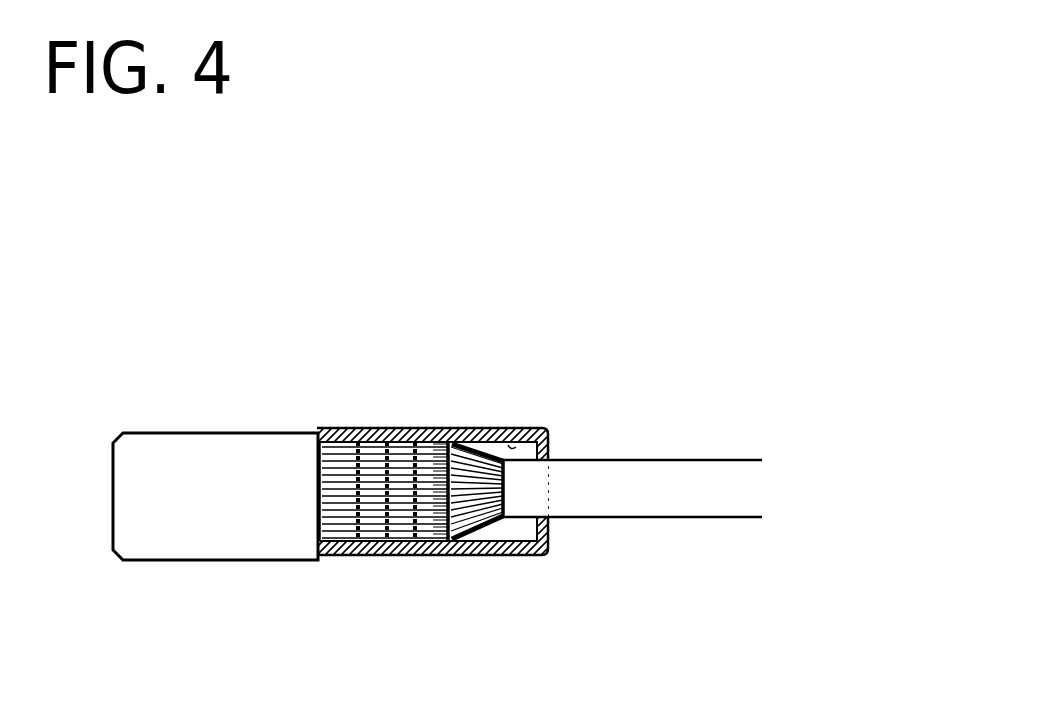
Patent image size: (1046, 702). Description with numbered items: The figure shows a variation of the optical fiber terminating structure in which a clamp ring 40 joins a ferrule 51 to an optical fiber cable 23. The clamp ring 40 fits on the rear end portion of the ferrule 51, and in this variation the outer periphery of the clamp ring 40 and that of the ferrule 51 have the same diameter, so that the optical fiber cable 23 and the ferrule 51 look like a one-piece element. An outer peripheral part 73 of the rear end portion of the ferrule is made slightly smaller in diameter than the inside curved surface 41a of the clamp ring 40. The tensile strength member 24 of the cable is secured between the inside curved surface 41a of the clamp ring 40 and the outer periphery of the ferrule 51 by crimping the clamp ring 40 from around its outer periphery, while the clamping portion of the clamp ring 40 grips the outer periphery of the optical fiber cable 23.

The optical fiber cable 23 is at (575, 508).
The tensile strength member 24 is at (475, 528).
The clamp ring 40 is at (418, 428).
The inside curved surface 41a is at (518, 448).
The ferrule 51 is at (195, 532).
The outer peripheral part 73 is at (325, 428).